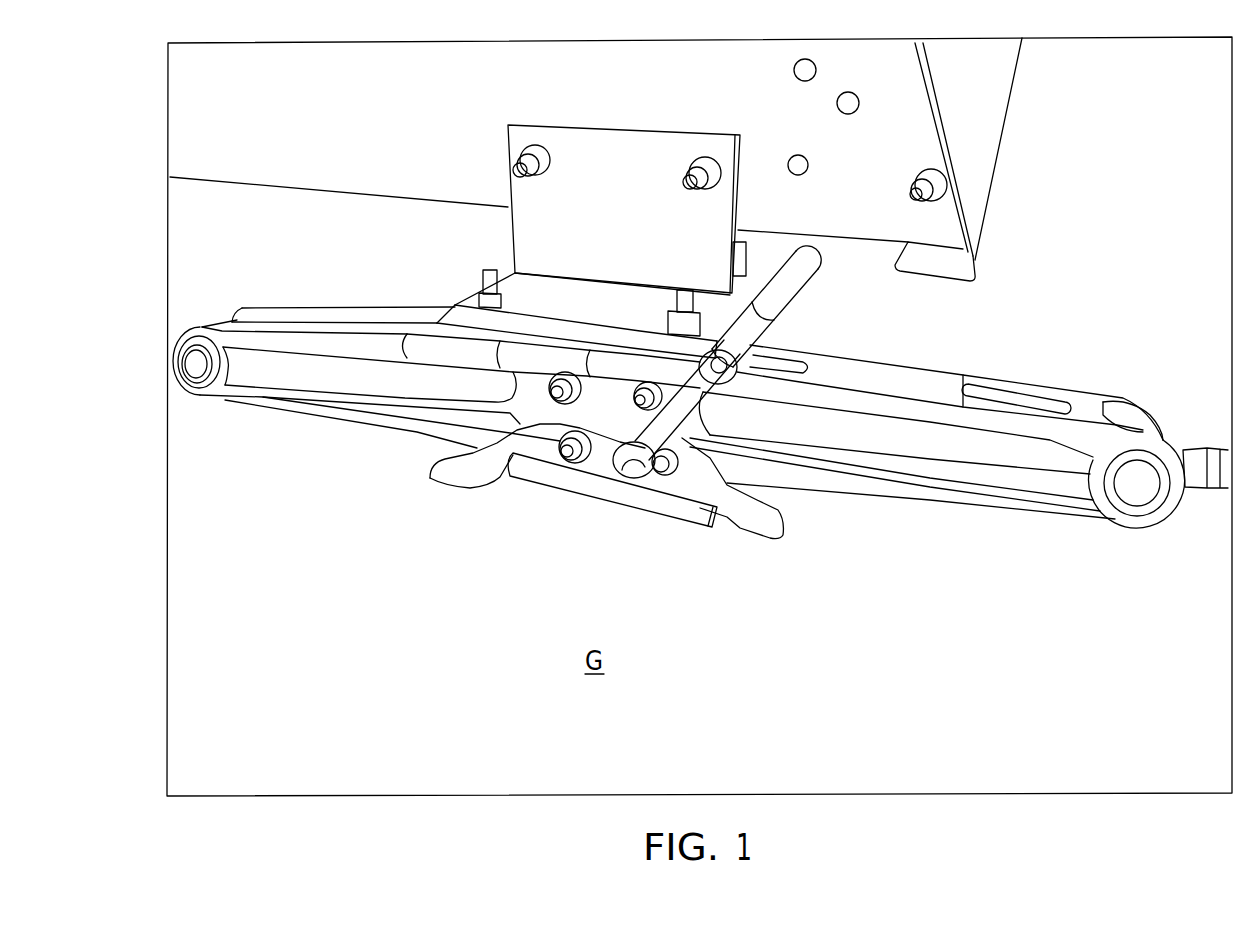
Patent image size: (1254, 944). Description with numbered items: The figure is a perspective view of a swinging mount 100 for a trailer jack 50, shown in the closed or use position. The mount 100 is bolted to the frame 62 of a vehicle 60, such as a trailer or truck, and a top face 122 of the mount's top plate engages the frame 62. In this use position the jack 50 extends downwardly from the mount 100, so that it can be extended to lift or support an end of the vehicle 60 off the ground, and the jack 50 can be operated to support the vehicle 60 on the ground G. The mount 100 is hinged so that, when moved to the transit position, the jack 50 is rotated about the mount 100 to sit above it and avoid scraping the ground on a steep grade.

The trailer jack 50 is at (467, 489).
The vehicle 60 is at (938, 58).
The frame 62 is at (223, 105).
The swinging mount 100 is at (458, 333).
The top face 122 is at (765, 273).